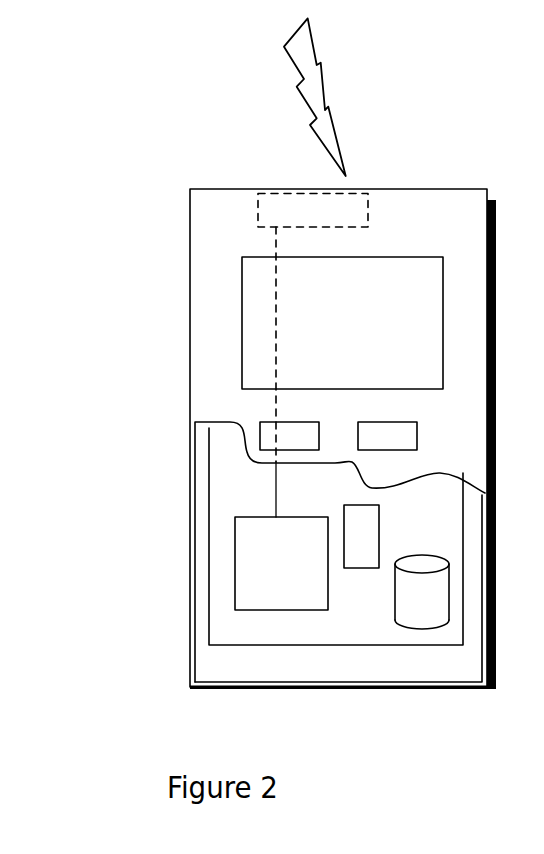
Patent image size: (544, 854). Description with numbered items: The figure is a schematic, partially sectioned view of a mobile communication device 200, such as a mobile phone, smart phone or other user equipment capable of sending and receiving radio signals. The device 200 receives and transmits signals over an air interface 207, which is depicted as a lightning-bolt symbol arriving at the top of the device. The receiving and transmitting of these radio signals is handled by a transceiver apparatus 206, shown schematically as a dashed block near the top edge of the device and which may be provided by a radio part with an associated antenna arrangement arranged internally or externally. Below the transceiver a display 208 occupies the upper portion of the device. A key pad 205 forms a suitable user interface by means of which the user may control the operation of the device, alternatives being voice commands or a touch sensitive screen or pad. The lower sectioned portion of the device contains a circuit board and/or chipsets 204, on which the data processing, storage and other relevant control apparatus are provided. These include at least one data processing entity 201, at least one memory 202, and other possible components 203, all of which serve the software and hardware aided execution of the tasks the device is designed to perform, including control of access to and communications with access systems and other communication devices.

The mobile device 200 is at (190, 232).
The data processing entity 201 is at (243, 547).
The memory 202 is at (415, 603).
The other possible components 203 is at (362, 520).
The circuit board and/or chipsets 204 is at (235, 628).
The key pad 205 is at (263, 436).
The transceiver apparatus 206 is at (358, 203).
The air interface 207 is at (348, 121).
The display 208 is at (258, 308).